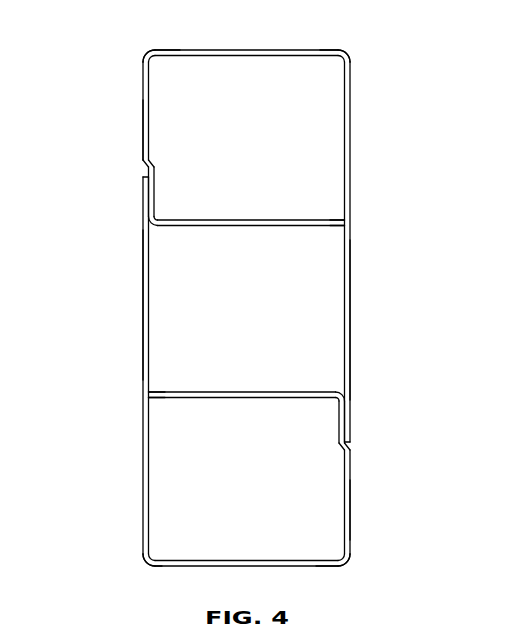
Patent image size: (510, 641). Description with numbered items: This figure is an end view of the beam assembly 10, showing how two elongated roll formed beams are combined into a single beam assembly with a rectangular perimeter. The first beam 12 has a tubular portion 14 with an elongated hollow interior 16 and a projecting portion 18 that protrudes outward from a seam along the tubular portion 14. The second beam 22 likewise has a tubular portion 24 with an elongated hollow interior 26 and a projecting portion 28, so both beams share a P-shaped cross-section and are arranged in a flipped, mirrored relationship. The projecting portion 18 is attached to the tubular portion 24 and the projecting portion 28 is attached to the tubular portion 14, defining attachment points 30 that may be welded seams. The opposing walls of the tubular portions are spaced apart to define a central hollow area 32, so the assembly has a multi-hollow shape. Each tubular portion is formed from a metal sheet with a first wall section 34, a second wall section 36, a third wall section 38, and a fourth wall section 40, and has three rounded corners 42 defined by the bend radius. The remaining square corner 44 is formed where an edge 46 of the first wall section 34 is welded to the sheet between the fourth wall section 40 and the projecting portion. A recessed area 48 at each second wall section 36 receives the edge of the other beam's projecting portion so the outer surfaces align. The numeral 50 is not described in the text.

The beam assembly 10 is at (113, 80).
The first beam 12 is at (322, 50).
The tubular portion 14 is at (178, 50).
The elongated hollow interior 16 is at (236, 132).
The projecting portion 18 is at (350, 310).
The second beam 22 is at (160, 567).
The tubular portion 24 is at (318, 567).
The elongated hollow interior 26 is at (236, 471).
The projecting portion 28 is at (143, 291).
The attachment points 30 is at (143, 197).
The hollow area 32 is at (236, 297).
The first wall section 34 is at (222, 220).
The second wall section 36 is at (143, 120).
The third wall section 38 is at (243, 50).
The fourth wall section 40 is at (350, 133).
The rounded corners 42 is at (157, 59).
The square corner 44 is at (344, 220).
The edge 46 is at (344, 228).
The recessed area 48 is at (148, 165).
The lip 50 is at (143, 90).